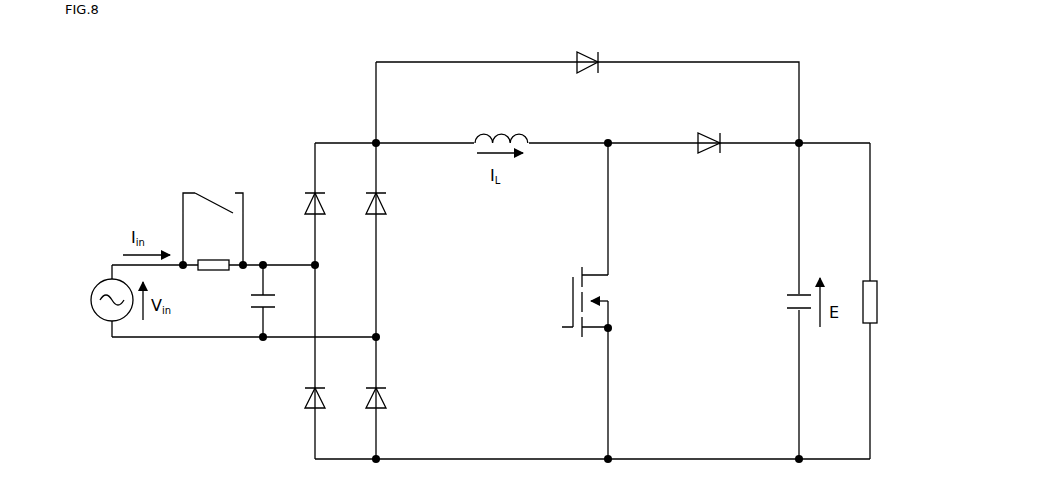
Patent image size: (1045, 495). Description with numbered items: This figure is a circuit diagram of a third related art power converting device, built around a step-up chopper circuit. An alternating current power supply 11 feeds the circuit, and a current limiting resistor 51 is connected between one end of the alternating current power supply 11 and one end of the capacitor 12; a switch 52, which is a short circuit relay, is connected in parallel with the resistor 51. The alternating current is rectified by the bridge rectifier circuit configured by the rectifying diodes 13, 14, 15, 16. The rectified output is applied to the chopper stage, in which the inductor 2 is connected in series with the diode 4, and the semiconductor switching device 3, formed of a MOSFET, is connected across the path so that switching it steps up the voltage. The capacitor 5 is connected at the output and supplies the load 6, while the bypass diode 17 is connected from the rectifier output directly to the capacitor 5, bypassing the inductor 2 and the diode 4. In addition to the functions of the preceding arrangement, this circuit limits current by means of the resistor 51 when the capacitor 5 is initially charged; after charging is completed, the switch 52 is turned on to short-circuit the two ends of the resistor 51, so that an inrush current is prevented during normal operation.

The inductor 2 is at (497, 127).
The semiconductor switching device 3 is at (560, 289).
The diode 4 is at (708, 128).
The capacitor 5 is at (790, 292).
The load 6 is at (873, 293).
The alternating current power supply 11 is at (96, 281).
The capacitor 12 is at (273, 284).
The rectifying diode 13 is at (307, 185).
The rectifying diode 14 is at (308, 383).
The rectifying diode 15 is at (368, 185).
The rectifying diode 16 is at (372, 383).
The bypass diode 17 is at (587, 50).
The current limiting resistor 51 is at (218, 271).
The switch 52 is at (212, 192).